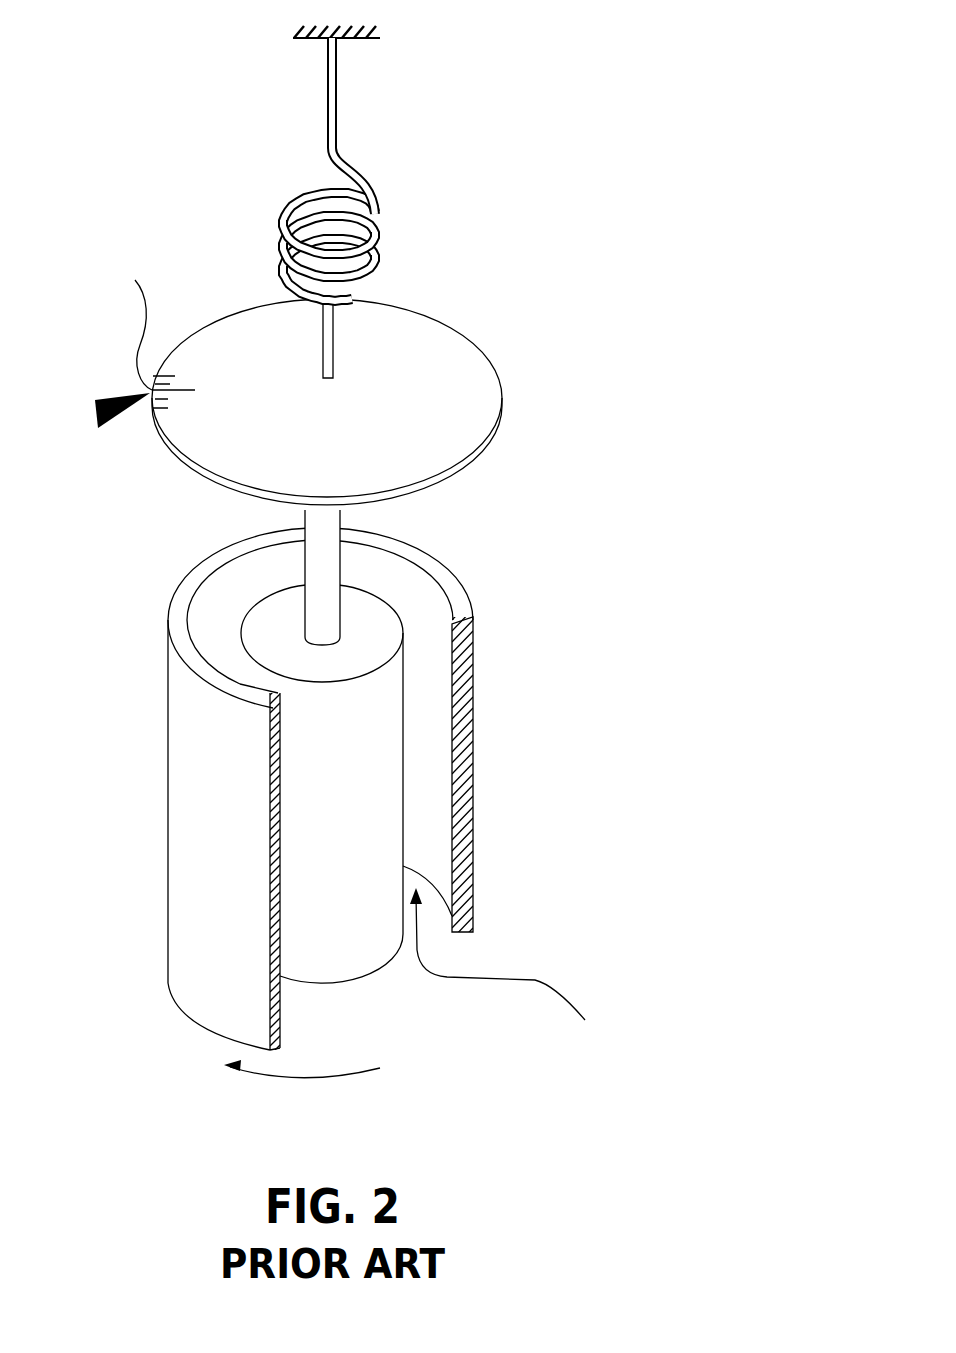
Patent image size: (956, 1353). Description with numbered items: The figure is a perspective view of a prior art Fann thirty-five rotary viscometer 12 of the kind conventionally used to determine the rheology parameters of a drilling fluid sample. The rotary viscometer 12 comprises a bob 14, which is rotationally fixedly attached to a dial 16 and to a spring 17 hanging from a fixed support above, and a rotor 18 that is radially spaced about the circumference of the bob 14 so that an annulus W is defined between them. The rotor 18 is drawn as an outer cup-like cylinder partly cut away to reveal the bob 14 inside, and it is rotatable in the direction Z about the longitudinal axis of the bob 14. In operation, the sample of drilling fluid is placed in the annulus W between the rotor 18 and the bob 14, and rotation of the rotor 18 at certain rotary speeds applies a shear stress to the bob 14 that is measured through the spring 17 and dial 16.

The rotary viscometer 12 is at (373, 555).
The bob 14 is at (405, 833).
The dial 16 is at (504, 393).
The spring 17 is at (385, 222).
The rotor 18 is at (474, 667).